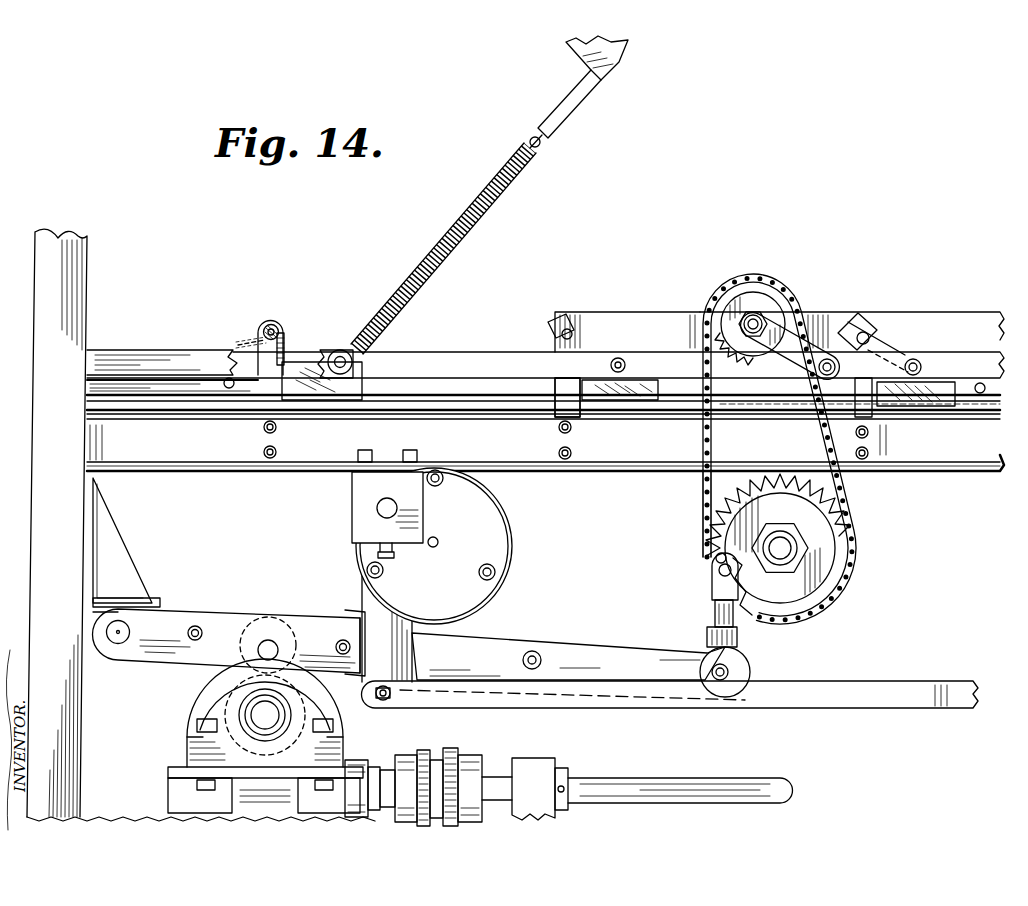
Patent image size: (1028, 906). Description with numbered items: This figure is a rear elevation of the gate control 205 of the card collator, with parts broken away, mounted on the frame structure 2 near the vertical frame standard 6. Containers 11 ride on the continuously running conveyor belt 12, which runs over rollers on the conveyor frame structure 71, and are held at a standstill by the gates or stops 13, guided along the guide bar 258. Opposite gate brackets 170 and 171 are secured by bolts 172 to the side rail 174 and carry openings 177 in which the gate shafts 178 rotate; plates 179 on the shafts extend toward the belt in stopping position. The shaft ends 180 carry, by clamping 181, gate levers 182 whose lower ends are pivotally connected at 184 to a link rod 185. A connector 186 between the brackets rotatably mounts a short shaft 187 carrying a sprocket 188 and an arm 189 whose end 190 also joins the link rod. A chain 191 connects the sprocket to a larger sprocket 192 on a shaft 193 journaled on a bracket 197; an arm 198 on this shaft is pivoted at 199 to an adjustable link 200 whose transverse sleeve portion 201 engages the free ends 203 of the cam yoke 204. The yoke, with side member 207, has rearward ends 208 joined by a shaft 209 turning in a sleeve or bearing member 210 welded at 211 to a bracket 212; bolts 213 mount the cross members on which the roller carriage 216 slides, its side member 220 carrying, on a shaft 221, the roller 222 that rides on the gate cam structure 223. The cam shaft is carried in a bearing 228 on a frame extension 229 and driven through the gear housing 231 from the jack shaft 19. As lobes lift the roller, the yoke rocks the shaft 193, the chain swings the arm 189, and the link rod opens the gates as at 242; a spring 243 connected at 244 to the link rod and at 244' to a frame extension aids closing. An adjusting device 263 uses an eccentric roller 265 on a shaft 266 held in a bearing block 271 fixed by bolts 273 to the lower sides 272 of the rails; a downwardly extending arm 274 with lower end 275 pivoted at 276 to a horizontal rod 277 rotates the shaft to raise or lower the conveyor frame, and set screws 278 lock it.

The frame structure 2 is at (35, 283).
The vertical frame standard 6 is at (42, 438).
The containers 11 is at (318, 395).
The conveyor belt 12 is at (497, 405).
The gates or stops 13 is at (238, 354).
The jack shaft 19 is at (725, 785).
The conveyor frame structure 71 is at (674, 416).
The gate bracket 170 is at (286, 330).
The gate bracket 171 is at (527, 357).
The bolts 172 is at (868, 433).
The side rail 174 is at (220, 452).
The openings 177 is at (277, 330).
The gate shafts 178 is at (267, 326).
The plates 179 is at (288, 350).
The end of gate shaft 180 is at (852, 328).
The clamping 181 is at (553, 327).
The gate levers 182 is at (595, 340).
The pivot 184 is at (918, 359).
The link rod 185 is at (952, 342).
The connector 186 is at (807, 347).
The short shaft 187 is at (745, 318).
The sprocket 188 is at (768, 302).
The arm 189 is at (848, 318).
The end of arm 190 is at (871, 338).
The chain 191 is at (700, 452).
The larger sprocket 192 is at (825, 546).
The shaft 193 is at (788, 560).
The bracket 197 is at (790, 470).
The arm 198 is at (714, 561).
The pivotal connection 199 is at (722, 577).
The adjustable link 200 is at (715, 612).
The transverse sleeve portion 201 is at (748, 654).
The forward or free ends of cam yoke 203 is at (735, 672).
The cam yoke 204 is at (535, 645).
The gate control 205 is at (258, 622).
The side member 207 is at (470, 640).
The rearward ends of cam yoke 208 is at (106, 640).
The shaft 209 is at (124, 636).
The sleeve or bearing member 210 is at (118, 600).
The welding 211 is at (146, 614).
The bracket 212 is at (150, 566).
The bolts 213 is at (199, 627).
The roller carriage 216 is at (362, 627).
The side member of roller carriage 220 is at (252, 610).
The shaft 221 is at (273, 645).
The roller 222 is at (283, 673).
The gate cam structure 223 is at (215, 700).
The bearing 228 is at (186, 766).
The frame extension 229 is at (176, 792).
The gear housing 231 is at (208, 682).
The open gate position 242 is at (250, 344).
The spring 243 is at (460, 247).
The lower spring connection 244 is at (359, 359).
The upper spring connection 244' is at (592, 92).
The guide bar 258 is at (188, 387).
The adjusting device 263 is at (410, 640).
The eccentric roller 265 is at (517, 532).
The shaft 266 is at (378, 553).
The bearing block 271 is at (385, 506).
The lower sides of side rails 272 is at (310, 455).
The bolts 273 is at (425, 456).
The downwardly extending arm 274 is at (395, 610).
The lower end of arm 275 is at (360, 702).
The pivotal connection 276 is at (405, 702).
The horizontal rod 277 is at (882, 705).
The set screws 278 is at (410, 554).